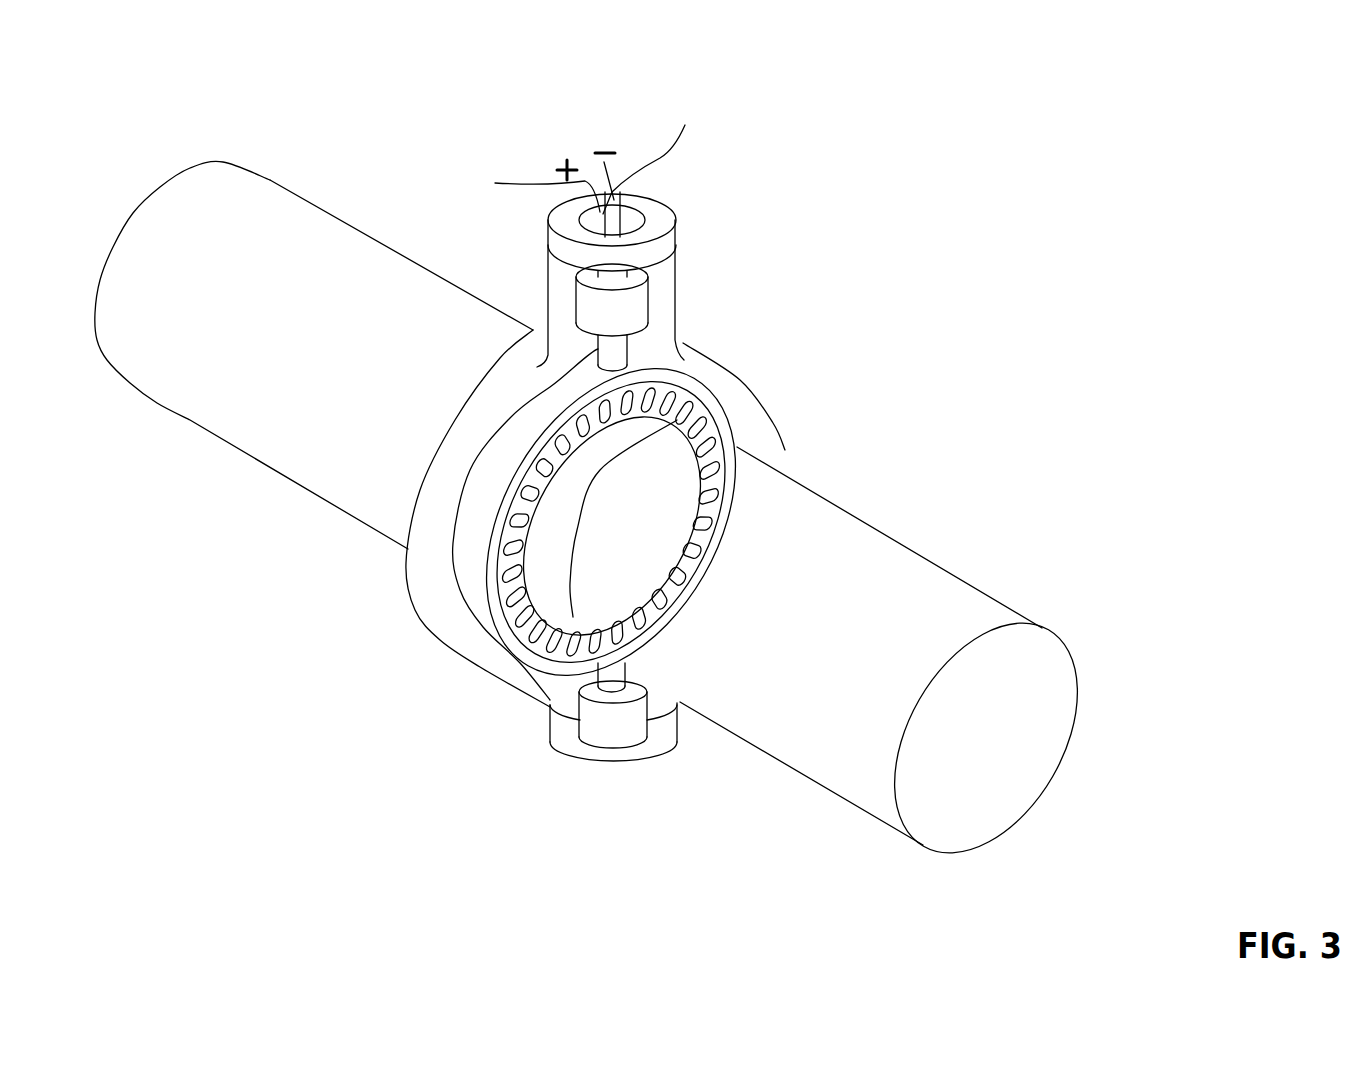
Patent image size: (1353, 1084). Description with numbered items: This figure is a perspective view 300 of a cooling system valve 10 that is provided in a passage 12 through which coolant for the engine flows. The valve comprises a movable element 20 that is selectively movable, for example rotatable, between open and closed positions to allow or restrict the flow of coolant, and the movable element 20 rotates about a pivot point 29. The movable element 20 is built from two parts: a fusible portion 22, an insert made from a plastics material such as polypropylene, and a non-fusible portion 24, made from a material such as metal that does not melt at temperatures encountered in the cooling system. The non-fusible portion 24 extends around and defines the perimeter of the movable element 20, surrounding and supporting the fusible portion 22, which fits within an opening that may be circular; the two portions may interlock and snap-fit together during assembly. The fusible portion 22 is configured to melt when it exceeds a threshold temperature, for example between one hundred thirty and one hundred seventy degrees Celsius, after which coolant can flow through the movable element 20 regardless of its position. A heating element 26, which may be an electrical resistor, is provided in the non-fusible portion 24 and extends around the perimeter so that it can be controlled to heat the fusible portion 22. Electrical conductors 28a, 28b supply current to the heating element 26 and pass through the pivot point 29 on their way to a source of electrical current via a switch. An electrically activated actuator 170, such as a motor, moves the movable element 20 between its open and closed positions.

The clamp assembly 10 is at (771, 404).
The passage 12 is at (258, 218).
The movable element 20 is at (653, 427).
The fusible portion 22 is at (663, 503).
The non-fusible portion 24 is at (723, 533).
The heating element 26 is at (683, 612).
The electrical conductor 28a is at (657, 149).
The electrical conductor 28b is at (516, 185).
The pivot point 29 is at (593, 307).
The electrically activated actuator 170 is at (677, 240).
The perspective view 300 is at (1243, 70).